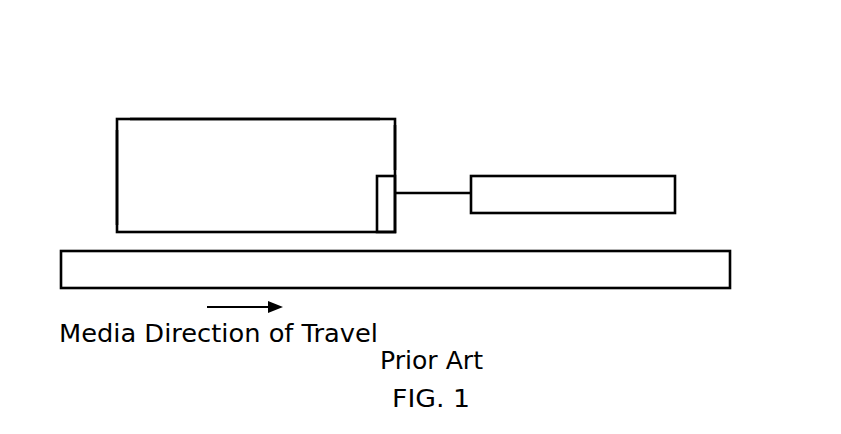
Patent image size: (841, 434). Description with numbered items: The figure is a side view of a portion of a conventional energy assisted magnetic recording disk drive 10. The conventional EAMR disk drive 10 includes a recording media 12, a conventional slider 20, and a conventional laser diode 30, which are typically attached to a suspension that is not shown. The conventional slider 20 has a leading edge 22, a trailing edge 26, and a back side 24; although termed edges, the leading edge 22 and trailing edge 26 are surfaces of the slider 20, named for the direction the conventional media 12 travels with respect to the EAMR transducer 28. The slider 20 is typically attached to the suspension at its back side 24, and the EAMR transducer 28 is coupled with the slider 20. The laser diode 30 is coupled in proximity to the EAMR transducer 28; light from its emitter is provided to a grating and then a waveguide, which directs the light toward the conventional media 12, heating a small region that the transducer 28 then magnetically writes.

The conventional energy assisted magnetic recording disk drive 10 is at (447, 41).
The recording media 12 is at (730, 268).
The conventional slider 20 is at (117, 158).
The leading edge 22 is at (60, 180).
The back side 24 is at (222, 92).
The trailing edge 26 is at (412, 132).
The EAMR transducer 28 is at (397, 185).
The conventional laser diode 30 is at (675, 195).